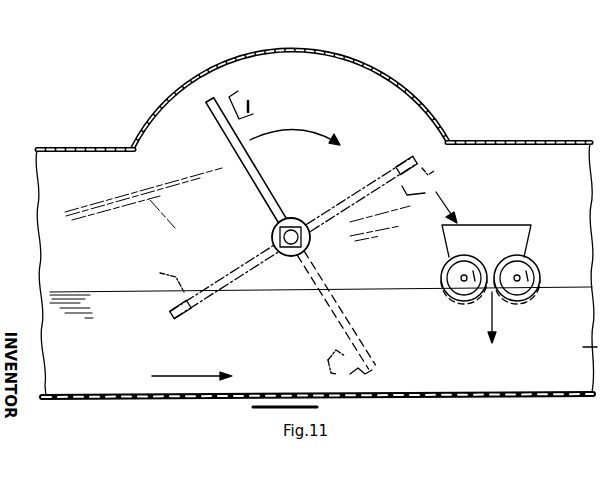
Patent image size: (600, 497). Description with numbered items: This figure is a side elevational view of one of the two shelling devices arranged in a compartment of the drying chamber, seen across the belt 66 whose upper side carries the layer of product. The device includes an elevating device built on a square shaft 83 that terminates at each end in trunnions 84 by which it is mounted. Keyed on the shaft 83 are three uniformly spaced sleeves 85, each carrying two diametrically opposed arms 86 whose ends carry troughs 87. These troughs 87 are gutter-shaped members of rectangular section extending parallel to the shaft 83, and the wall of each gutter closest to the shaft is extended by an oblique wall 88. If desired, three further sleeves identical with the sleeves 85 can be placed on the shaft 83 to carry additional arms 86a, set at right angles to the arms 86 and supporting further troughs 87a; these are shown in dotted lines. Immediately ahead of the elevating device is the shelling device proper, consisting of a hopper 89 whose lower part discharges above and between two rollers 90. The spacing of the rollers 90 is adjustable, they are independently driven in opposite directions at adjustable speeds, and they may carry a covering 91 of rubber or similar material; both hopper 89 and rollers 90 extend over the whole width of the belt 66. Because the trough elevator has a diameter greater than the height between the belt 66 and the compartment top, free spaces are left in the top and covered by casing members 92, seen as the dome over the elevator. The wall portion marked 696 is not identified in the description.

The belt 66 is at (228, 397).
The square shaft 83 is at (292, 227).
The trunnions 84 is at (290, 245).
The sleeves 85 is at (272, 236).
The arms 86 is at (262, 190).
The arms 86a is at (229, 270).
The troughs 87 is at (228, 98).
The troughs 87a is at (432, 175).
The oblique wall 88 is at (250, 108).
The hopper 89 is at (512, 231).
The rollers 90 is at (460, 278).
The covering 91 is at (449, 266).
The casing members 92 is at (417, 100).
The housing roof 696 is at (513, 155).